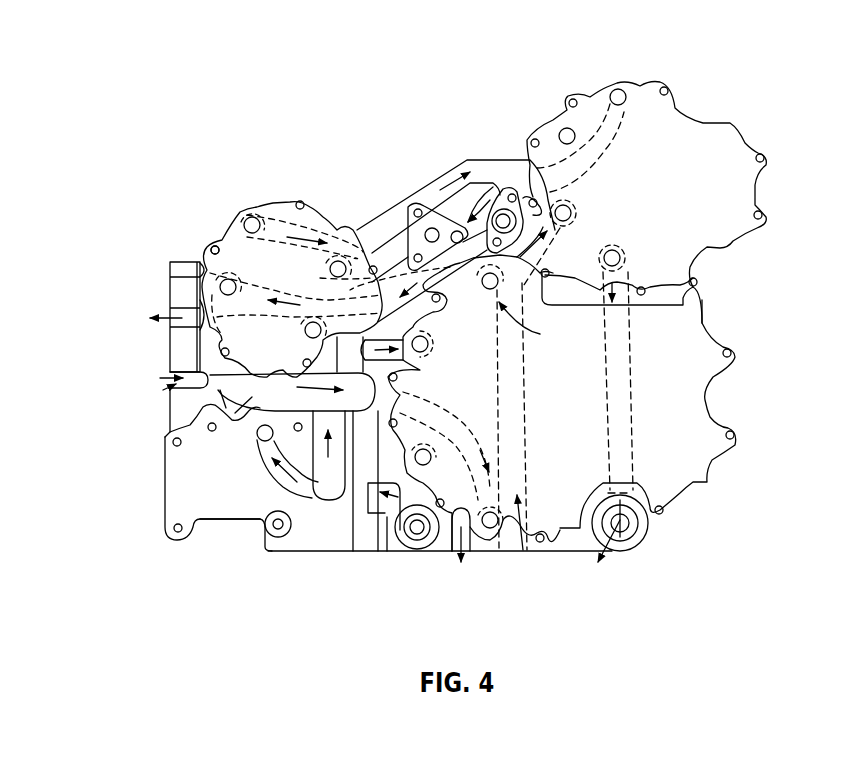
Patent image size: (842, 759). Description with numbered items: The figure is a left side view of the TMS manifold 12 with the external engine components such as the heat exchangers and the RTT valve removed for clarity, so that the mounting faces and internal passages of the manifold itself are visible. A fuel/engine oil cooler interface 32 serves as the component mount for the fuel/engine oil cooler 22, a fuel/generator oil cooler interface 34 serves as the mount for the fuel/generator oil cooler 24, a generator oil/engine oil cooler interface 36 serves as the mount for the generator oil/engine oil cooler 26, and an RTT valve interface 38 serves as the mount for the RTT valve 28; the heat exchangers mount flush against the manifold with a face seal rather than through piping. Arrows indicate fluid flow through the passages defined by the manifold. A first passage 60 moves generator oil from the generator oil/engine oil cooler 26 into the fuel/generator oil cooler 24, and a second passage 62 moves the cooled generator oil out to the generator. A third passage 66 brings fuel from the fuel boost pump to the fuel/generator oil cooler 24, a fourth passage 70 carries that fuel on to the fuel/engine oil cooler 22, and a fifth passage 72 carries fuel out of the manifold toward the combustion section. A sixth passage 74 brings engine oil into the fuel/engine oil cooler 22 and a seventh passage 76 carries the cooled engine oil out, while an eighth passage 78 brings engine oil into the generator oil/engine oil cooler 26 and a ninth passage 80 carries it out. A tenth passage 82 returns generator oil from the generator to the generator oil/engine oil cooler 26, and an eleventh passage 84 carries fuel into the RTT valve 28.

The TMS manifold 12 is at (284, 59).
The fuel/engine oil cooler 22 is at (440, 403).
The fuel/generator oil cooler 24 is at (611, 233).
The generator oil/engine oil cooler 26 is at (326, 289).
The RTT valve 28 is at (218, 477).
The fuel/engine oil cooler interface 32 is at (727, 395).
The fuel/generator oil cooler interface 34 is at (657, 305).
The generator oil/engine oil cooler interface 36 is at (204, 230).
The RTT valve interface 38 is at (227, 542).
The first passage 60 is at (400, 114).
The second passage 62 is at (644, 401).
The third passage 66 is at (557, 348).
The fourth passage 70 is at (395, 331).
The fifth passage 72 is at (483, 496).
The sixth passage 74 is at (315, 495).
The seventh passage 76 is at (352, 260).
The eighth passage 78 is at (427, 235).
The ninth passage 80 is at (141, 298).
The tenth passage 82 is at (342, 488).
The eleventh passage 84 is at (142, 480).